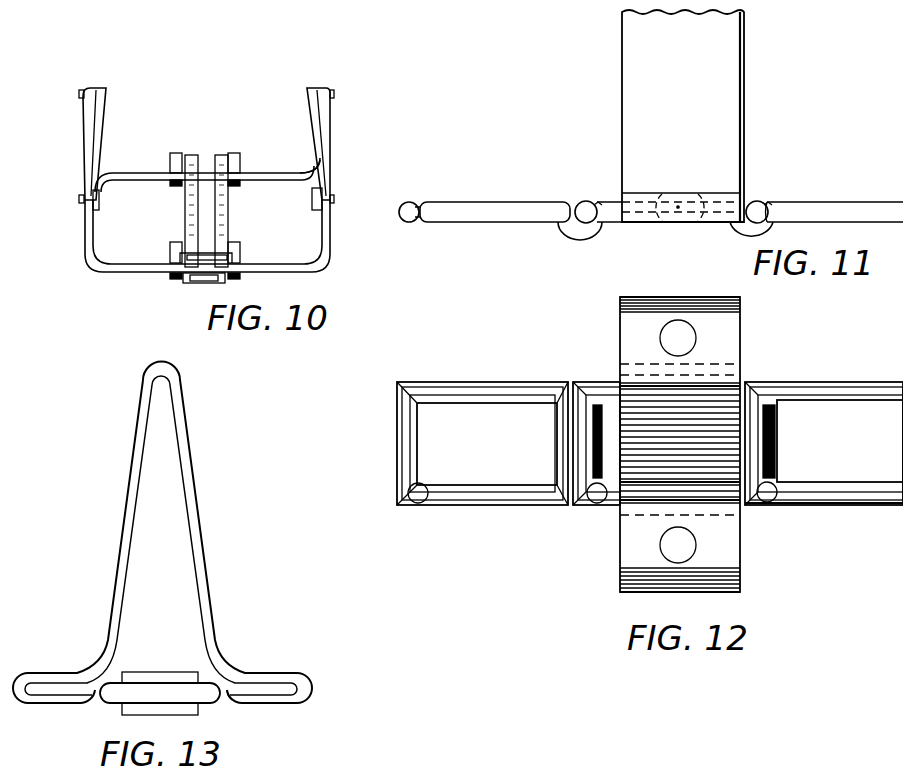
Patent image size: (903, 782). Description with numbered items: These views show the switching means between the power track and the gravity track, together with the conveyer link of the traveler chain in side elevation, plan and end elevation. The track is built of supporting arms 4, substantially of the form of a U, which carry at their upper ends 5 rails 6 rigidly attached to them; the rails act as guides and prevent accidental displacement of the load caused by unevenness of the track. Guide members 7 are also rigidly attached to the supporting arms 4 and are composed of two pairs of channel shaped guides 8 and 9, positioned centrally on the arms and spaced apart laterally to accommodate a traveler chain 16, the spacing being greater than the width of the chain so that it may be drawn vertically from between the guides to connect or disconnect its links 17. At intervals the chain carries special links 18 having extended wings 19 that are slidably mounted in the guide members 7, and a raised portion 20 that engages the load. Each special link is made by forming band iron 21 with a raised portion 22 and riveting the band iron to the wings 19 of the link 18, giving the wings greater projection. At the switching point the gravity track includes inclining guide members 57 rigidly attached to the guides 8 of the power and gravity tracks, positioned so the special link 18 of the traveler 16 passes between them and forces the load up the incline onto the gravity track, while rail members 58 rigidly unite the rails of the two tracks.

In FIG. 10, the supporting arm 4 is at (330, 243).
In FIG. 10, the upper end 5 is at (330, 95).
In FIG. 10, the rail 6 is at (322, 88).
In FIG. 10, the guide member 7 is at (185, 290).
In FIG. 10, the channel shaped guide 8 is at (220, 250).
In FIG. 10, the channel shaped guide 9 is at (193, 287).
In FIG. 11, the traveler chain 16 is at (837, 200).
In FIG. 12, the traveler chain 16 is at (833, 417).
In FIG. 11, the link 17 is at (472, 217).
In FIG. 12, the link 17 is at (850, 505).
In FIG. 11, the special link 18 is at (667, 217).
In FIG. 12, the special link 18 is at (590, 503).
In FIG. 13, the special link 18 is at (138, 690).
In FIG. 12, the wing 19 is at (730, 562).
In FIG. 13, the wing 19 is at (280, 687).
In FIG. 11, the raised portion 20 is at (683, 116).
In FIG. 12, the raised portion 20 is at (683, 442).
In FIG. 13, the raised portion 20 is at (192, 518).
In FIG. 11, the band iron 21 is at (723, 198).
In FIG. 12, the band iron 21 is at (637, 330).
In FIG. 13, the band iron 21 is at (250, 678).
In FIG. 11, the raised portion 22 is at (728, 136).
In FIG. 13, the raised portion 22 is at (200, 578).
In FIG. 10, the inclining guide member 57 is at (185, 210).
In FIG. 10, the rail member 58 is at (313, 178).